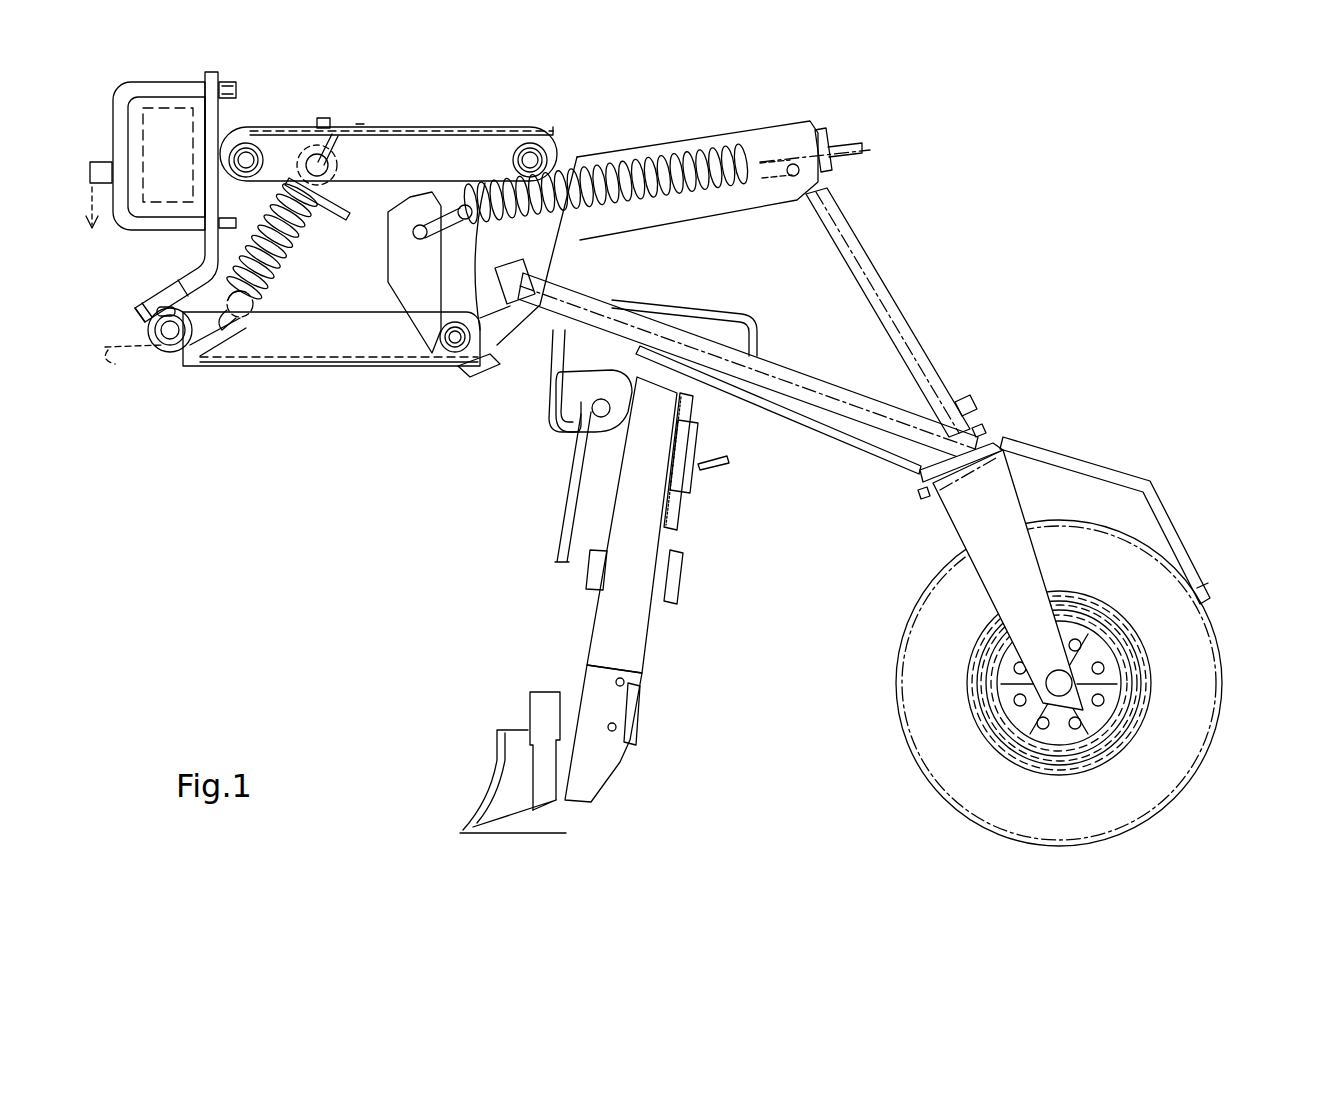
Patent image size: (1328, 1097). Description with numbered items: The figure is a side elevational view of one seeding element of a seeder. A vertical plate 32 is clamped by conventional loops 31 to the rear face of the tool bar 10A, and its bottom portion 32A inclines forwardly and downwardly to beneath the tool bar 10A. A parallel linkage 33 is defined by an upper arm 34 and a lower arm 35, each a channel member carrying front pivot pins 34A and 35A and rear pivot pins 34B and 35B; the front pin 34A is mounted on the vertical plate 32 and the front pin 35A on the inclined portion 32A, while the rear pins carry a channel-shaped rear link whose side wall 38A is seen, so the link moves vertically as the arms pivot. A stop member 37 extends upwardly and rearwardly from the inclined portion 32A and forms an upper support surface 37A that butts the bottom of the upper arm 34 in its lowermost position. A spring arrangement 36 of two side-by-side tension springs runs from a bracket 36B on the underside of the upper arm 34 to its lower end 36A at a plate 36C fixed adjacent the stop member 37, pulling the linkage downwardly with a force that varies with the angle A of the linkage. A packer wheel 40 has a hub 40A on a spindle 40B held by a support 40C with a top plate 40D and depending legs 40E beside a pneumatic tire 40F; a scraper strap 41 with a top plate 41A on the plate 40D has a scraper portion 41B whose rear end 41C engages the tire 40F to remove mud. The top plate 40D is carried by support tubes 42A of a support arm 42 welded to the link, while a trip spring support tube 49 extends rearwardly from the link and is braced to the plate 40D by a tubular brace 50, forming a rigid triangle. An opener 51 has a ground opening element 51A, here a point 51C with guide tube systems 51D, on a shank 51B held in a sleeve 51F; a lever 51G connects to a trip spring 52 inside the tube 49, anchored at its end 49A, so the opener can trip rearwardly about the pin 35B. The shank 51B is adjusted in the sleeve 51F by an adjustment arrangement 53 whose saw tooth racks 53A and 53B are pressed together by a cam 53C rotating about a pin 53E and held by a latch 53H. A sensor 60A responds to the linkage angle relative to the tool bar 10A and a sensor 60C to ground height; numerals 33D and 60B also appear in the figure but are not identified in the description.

The tool bar 10A is at (163, 204).
The loops 31 is at (163, 90).
The vertical plate 32 is at (212, 80).
The bottom portion of vertical plate 32A is at (153, 295).
The parallel linkage 33 is at (421, 117).
The upper parallel arm 34 is at (460, 152).
The front pivot pin of upper arm 34A is at (249, 152).
The rear pivot pin of upper arm 34B is at (540, 160).
The lower parallel arm 35 is at (318, 342).
The front pivot pin of lower arm 35A is at (171, 342).
The rear pivot pin of lower arm 35B is at (460, 350).
The spring arrangement 36 is at (268, 292).
The lower end of spring 36A is at (232, 320).
The bracket 36B is at (358, 124).
The plate 36C is at (208, 324).
The stop member 37 is at (150, 316).
The upper support surface 37A is at (320, 240).
The side wall of rear link 38A is at (482, 336).
The packer wheel 40 is at (1188, 623).
The hub 40A is at (1120, 690).
The spindle 40B is at (1057, 685).
The support 40C is at (1008, 535).
The top plate 40D is at (1003, 500).
The depending leg 40E is at (1040, 603).
The pneumatic tire 40F is at (1192, 730).
The scraper strap 41 is at (1057, 437).
The top plate of scraper strap 41A is at (930, 483).
The scraper portion 41B is at (1138, 474).
The rear end of strap 41C is at (1198, 575).
The support arm 42 is at (862, 375).
The support tube 42A is at (872, 426).
The trip spring support tube 49 is at (759, 150).
The end of support tube 49A is at (806, 128).
The tubular brace 50 is at (868, 290).
The opener 51 is at (636, 646).
The ground opening element 51A is at (474, 794).
The shank 51B is at (645, 538).
The point 51C is at (530, 820).
The seed and/or fertilizer guide tube system 51D is at (540, 700).
The sleeve 51F is at (684, 560).
The lever 51G is at (407, 292).
The trip spring 52 is at (690, 174).
The adjustment arrangement 53 is at (732, 460).
The saw tooth rack on sleeve 53A is at (690, 424).
The saw tooth rack on shank 53B is at (693, 468).
The cam 53C is at (548, 432).
The pin 53E is at (588, 571).
The latch 53H is at (696, 442).
The tie rod 33D is at (560, 523).
The sensor 60A is at (316, 158).
The arm sensor 60B is at (977, 396).
The sensor 60C is at (110, 165).
The angle A is at (150, 360).